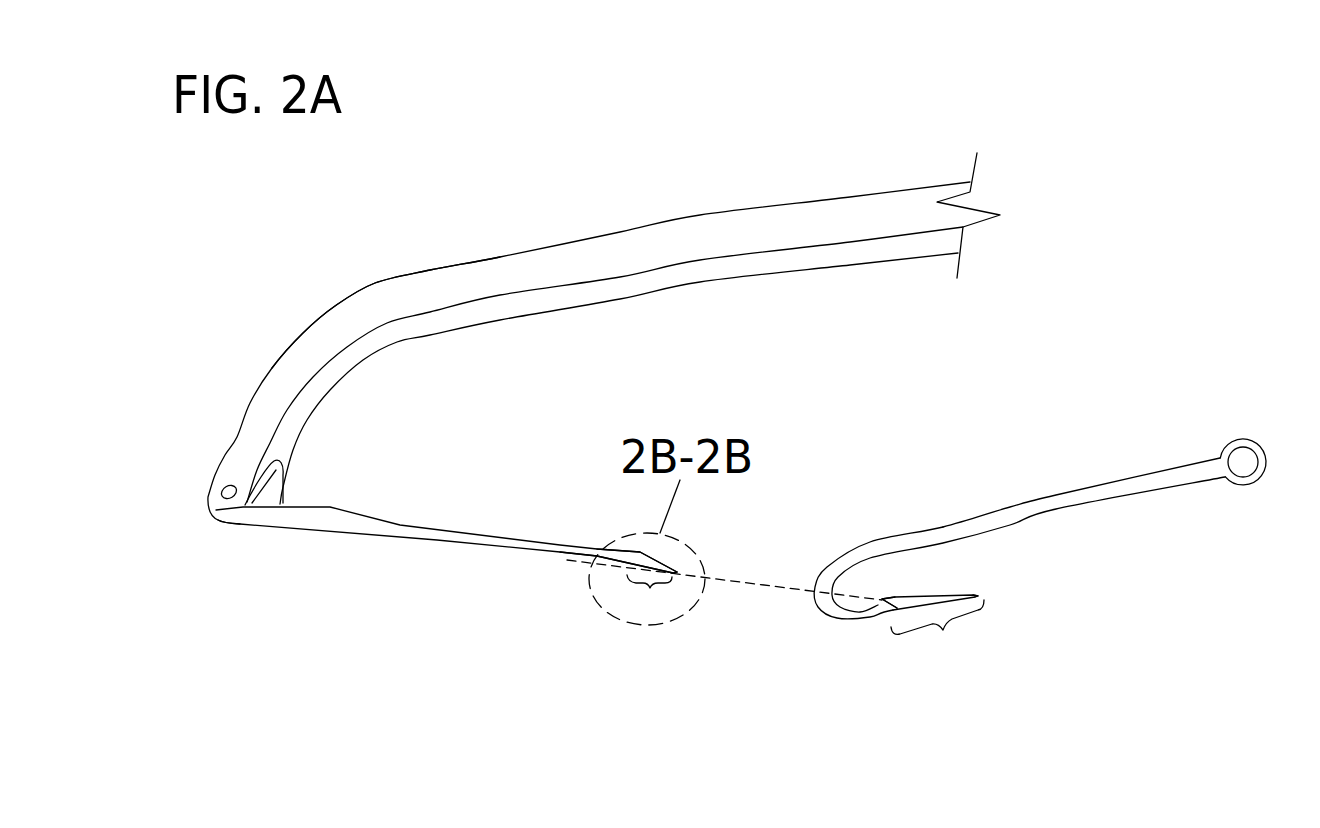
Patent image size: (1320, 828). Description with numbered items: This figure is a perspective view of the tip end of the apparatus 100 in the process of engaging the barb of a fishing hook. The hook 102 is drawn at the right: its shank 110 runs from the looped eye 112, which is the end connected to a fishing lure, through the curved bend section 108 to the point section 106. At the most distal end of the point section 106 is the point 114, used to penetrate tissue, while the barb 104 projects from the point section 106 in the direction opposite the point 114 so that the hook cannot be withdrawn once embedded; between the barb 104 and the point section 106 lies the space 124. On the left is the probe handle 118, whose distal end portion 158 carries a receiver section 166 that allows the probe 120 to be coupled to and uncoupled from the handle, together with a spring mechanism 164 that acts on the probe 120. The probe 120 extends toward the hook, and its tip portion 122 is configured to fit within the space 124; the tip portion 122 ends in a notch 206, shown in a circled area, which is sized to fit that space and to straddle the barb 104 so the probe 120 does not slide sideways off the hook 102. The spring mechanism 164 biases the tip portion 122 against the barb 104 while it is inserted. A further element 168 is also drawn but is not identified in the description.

The apparatus 100 is at (620, 150).
The probe handle 118 is at (492, 213).
The distal end portion 158 is at (380, 283).
The receiver section 166 is at (228, 418).
The spring mechanism 164 is at (307, 528).
The wire 168 is at (562, 561).
The probe 120 is at (559, 601).
The tip portion 122 is at (650, 598).
The notch 206 is at (678, 573).
The hook 102 is at (1157, 514).
The shank 110 is at (1012, 503).
The eye 112 is at (1243, 437).
The bend section 108 is at (816, 579).
The barb 104 is at (886, 594).
The point 114 is at (973, 595).
The point section 106 is at (937, 629).
The space 124 is at (884, 603).